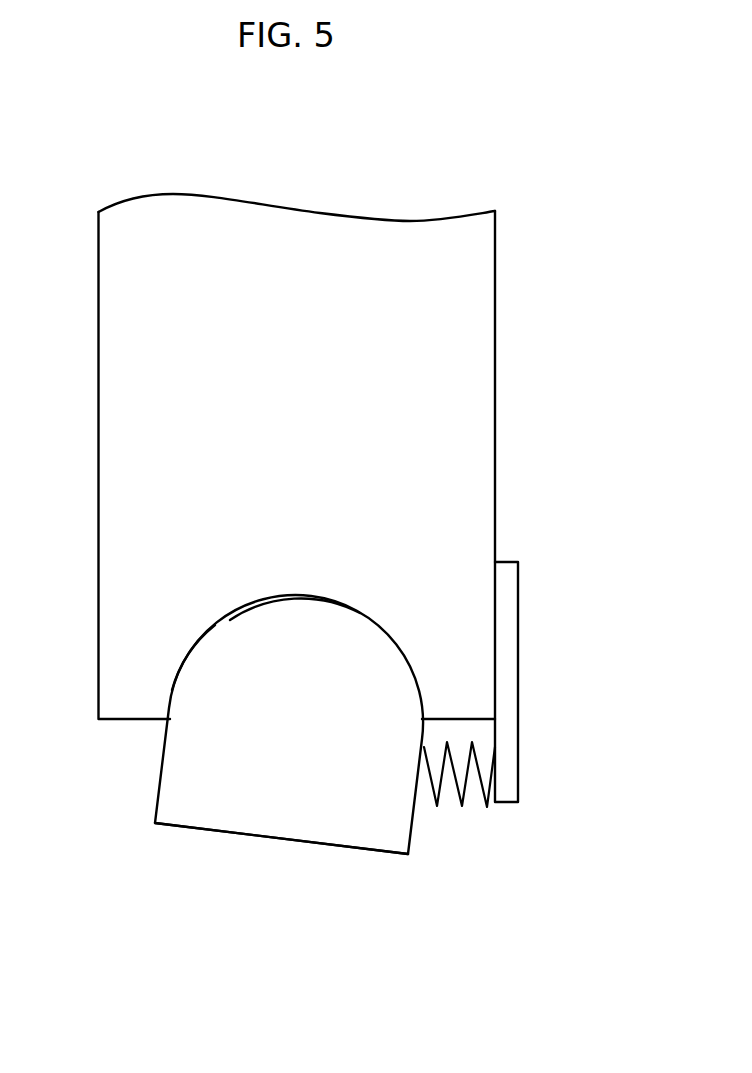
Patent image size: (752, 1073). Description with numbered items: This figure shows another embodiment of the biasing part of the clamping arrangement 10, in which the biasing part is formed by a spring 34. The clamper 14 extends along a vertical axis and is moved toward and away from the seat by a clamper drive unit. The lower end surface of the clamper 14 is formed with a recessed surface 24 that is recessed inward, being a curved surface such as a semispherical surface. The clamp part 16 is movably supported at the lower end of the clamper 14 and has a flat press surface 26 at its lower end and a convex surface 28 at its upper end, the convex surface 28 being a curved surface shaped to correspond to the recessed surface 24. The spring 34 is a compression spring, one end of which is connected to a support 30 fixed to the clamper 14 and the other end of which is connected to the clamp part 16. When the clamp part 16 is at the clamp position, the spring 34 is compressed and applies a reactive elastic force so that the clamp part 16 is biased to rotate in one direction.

The device 10 is at (533, 154).
The clamper 14 is at (472, 384).
The clamp part 16 is at (177, 803).
The recessed surface 24 is at (184, 656).
The press surface 26 is at (225, 832).
The convex surface 28 is at (332, 600).
The support 30 is at (510, 610).
The spring 34 is at (443, 788).